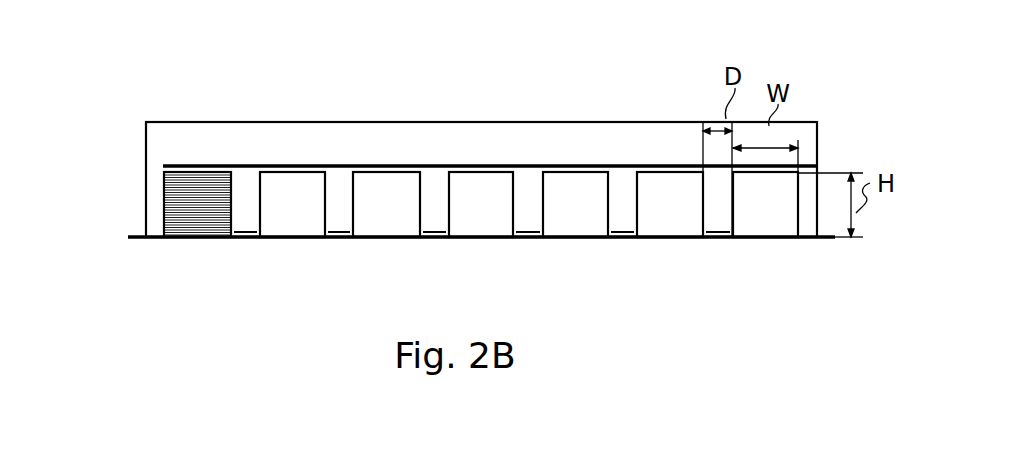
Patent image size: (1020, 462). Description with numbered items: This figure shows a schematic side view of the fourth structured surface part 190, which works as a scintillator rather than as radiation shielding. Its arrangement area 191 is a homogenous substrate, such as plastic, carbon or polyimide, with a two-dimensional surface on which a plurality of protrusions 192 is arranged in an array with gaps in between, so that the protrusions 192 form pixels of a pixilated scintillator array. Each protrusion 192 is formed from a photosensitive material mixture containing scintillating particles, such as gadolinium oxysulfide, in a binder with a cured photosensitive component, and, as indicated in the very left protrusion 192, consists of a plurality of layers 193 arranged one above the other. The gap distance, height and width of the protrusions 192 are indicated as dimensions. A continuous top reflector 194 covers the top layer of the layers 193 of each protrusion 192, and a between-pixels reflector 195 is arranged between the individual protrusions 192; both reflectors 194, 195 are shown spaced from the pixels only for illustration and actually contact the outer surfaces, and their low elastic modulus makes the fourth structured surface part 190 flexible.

The fourth structured surface part 190 is at (184, 101).
The arrangement area 191 is at (150, 236).
The protrusions 192 is at (207, 195).
The layers 193 is at (188, 200).
The top reflector 194 is at (207, 164).
The between-pixels reflector 195 is at (341, 200).